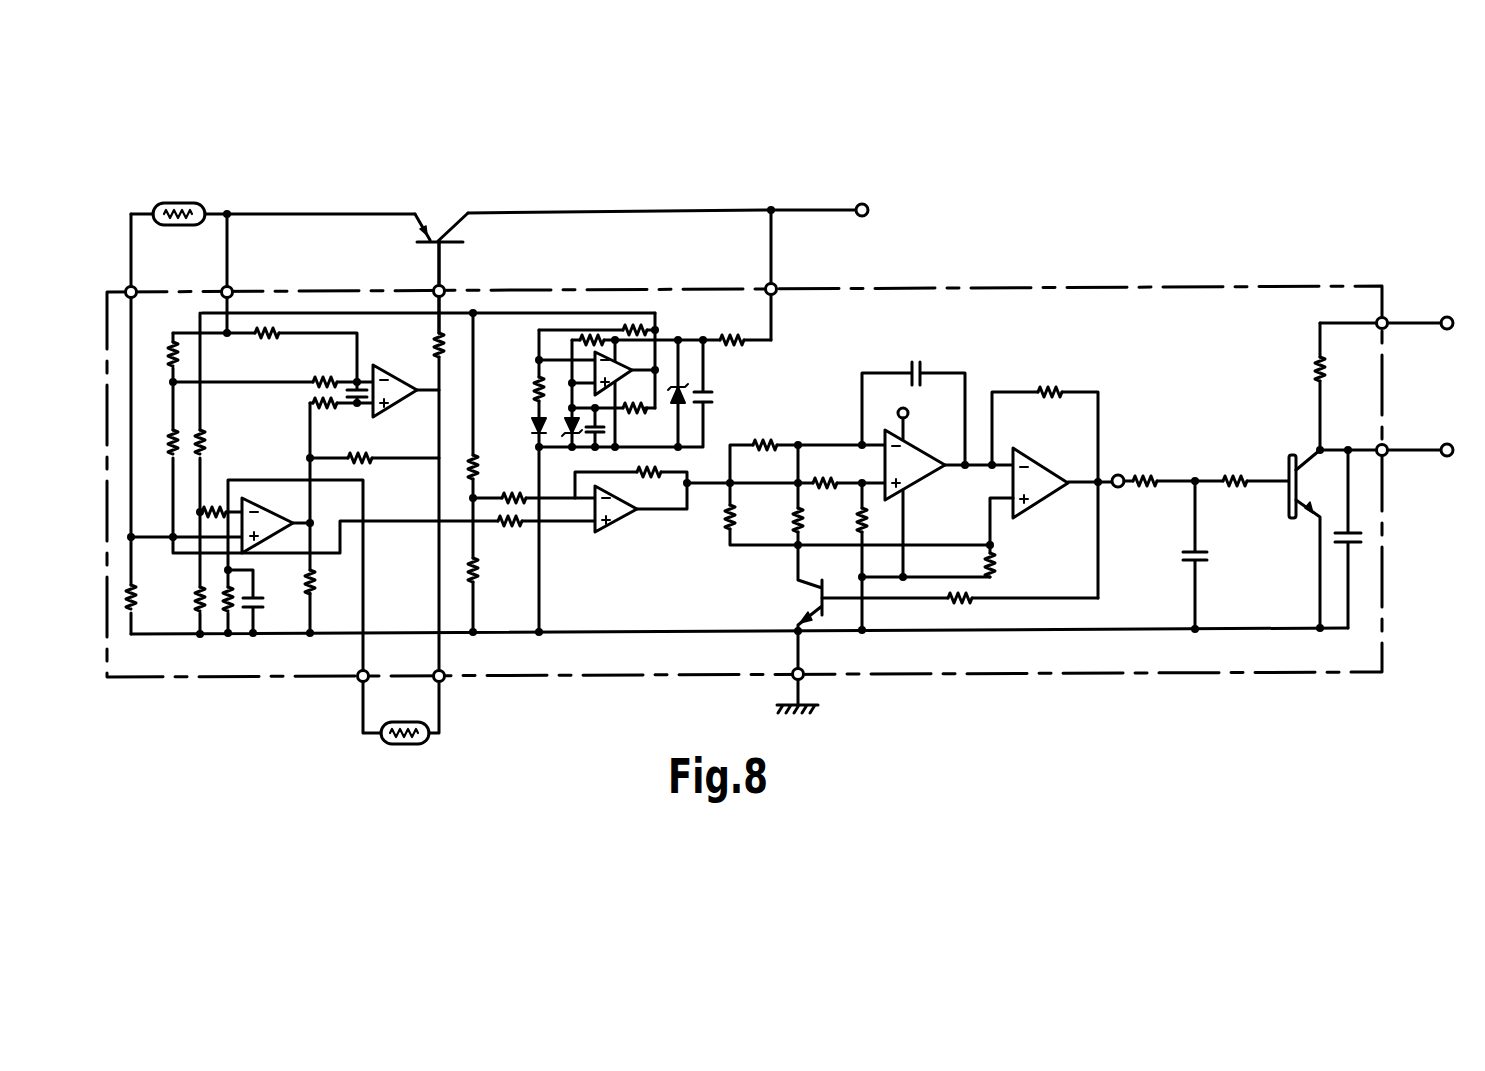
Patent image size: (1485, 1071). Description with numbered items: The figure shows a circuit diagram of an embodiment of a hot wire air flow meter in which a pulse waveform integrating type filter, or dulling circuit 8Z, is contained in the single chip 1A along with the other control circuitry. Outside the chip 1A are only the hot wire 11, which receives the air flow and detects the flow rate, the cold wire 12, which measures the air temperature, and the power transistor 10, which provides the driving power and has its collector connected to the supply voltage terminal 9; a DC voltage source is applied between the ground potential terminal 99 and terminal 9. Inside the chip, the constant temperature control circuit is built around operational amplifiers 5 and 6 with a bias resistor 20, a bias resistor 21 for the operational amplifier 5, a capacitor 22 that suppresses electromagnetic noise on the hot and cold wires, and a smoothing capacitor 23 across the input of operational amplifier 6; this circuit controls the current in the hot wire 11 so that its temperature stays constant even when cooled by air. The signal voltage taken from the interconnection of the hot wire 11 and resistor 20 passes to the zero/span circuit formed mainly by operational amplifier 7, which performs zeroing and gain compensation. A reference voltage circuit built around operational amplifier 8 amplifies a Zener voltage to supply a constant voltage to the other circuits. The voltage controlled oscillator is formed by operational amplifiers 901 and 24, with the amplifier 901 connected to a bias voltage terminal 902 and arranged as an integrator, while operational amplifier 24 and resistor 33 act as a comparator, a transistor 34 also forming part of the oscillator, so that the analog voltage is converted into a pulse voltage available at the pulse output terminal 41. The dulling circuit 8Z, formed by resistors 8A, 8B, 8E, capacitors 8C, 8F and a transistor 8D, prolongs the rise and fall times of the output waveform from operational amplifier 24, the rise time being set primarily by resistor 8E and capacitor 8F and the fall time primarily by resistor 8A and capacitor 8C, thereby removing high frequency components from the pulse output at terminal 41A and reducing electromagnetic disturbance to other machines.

The single chip 1A is at (1125, 288).
The operational amplifier 5 is at (268, 508).
The operational amplifier 6 is at (393, 405).
The operational amplifier 7 is at (623, 520).
The operational amplifier 8 is at (633, 373).
The supply voltage terminal 9 is at (868, 205).
The power transistor 10 is at (447, 236).
The hot wire 11 is at (172, 203).
The cold wire 12 is at (433, 740).
The bias resistor 20 is at (138, 600).
The bias resistor 21 is at (172, 457).
The capacitor 22 is at (263, 610).
The smoothing capacitor 23 is at (347, 392).
The operational amplifier 24 is at (1043, 497).
The resistor 33 is at (1047, 387).
The transistor 34 is at (918, 362).
The pulse output terminal 41 is at (1120, 477).
The terminal 41A is at (1447, 444).
The ground potential terminal 99 is at (817, 703).
The operational amplifier 901 is at (927, 467).
The bias voltage terminal 902 is at (898, 413).
The resistor 8A is at (1150, 478).
The resistor 8B is at (1235, 477).
The capacitor 8C is at (1190, 562).
The transistor 8D is at (1293, 520).
The resistor 8E is at (1315, 365).
The capacitor 8F is at (1357, 533).
The dulling circuit 8Z is at (1227, 630).